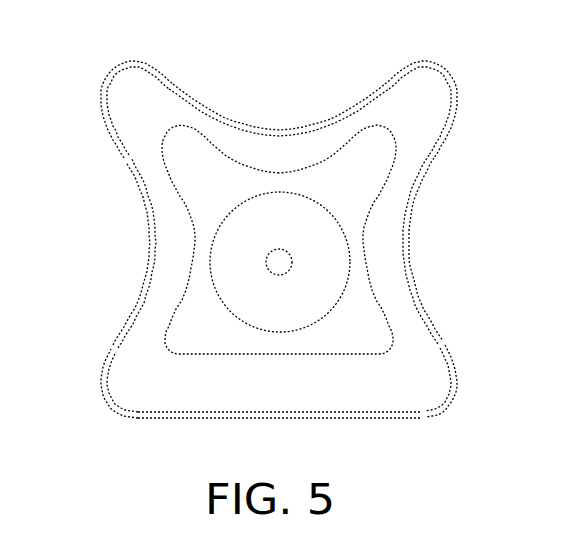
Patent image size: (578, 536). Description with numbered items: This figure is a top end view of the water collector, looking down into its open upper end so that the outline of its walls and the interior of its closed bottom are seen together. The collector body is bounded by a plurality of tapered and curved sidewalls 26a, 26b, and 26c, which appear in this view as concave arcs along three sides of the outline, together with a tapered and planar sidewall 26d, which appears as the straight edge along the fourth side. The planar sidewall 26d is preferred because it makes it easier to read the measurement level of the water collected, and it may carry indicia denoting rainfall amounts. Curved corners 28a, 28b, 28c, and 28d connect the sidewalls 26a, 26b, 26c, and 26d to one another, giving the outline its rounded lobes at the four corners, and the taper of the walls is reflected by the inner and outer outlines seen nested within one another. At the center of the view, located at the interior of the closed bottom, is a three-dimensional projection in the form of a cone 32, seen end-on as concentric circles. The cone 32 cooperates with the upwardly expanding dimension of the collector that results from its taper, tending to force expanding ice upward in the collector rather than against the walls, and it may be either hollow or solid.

The tapered and curved sidewall 26a is at (150, 244).
The tapered and curved sidewall 26b is at (275, 126).
The tapered and curved sidewall 26c is at (410, 248).
The tapered and planar sidewall 26d is at (370, 416).
The curved corner 28a is at (108, 78).
The curved corner 28b is at (437, 67).
The curved corner 28c is at (457, 392).
The curved corner 28d is at (106, 402).
The cone 32 is at (246, 280).